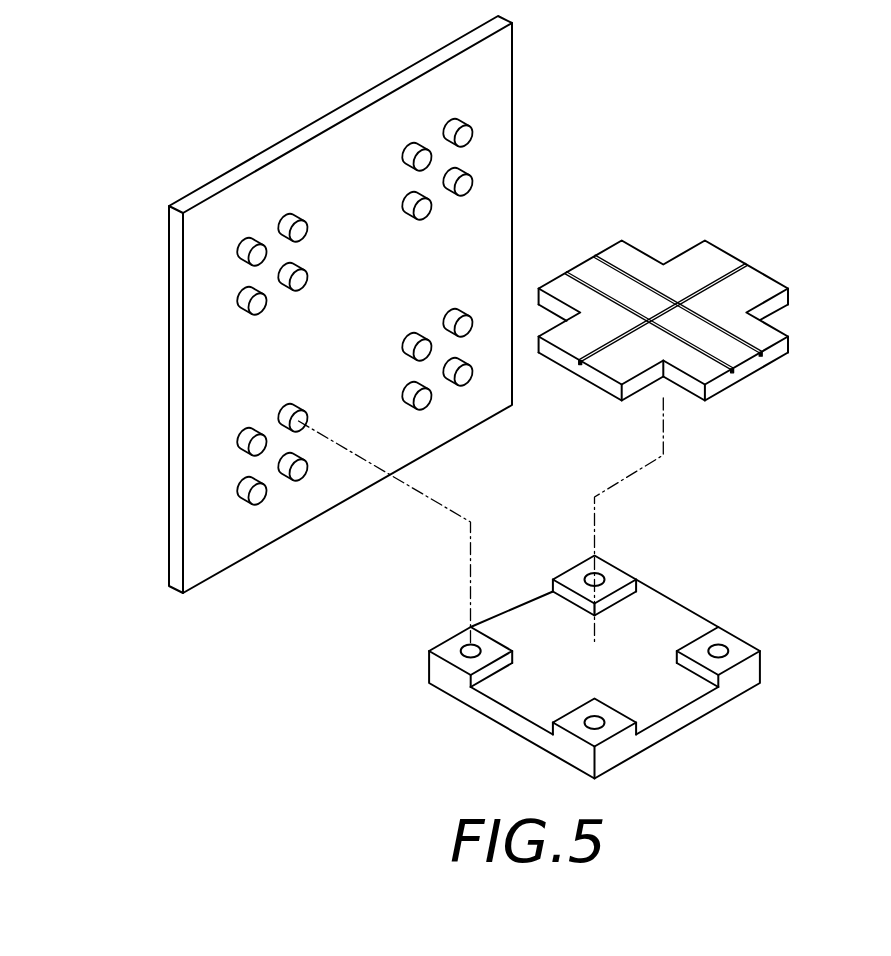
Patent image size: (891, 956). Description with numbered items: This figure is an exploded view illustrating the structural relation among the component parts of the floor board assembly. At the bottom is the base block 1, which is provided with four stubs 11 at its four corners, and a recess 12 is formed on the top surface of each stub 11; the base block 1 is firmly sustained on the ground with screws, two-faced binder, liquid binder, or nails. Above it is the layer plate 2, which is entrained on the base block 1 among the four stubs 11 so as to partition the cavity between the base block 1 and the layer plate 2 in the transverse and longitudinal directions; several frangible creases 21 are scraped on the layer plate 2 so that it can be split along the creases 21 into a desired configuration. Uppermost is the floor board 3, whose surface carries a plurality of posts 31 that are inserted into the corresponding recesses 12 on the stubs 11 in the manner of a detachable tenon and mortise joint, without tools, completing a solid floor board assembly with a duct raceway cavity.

The base block 1 is at (638, 674).
The stub 11 is at (745, 647).
The recess 12 is at (592, 724).
The layer plate 2 is at (699, 309).
The frangible crease 21 is at (752, 342).
The floor board 3 is at (314, 313).
The post 31 is at (260, 505).